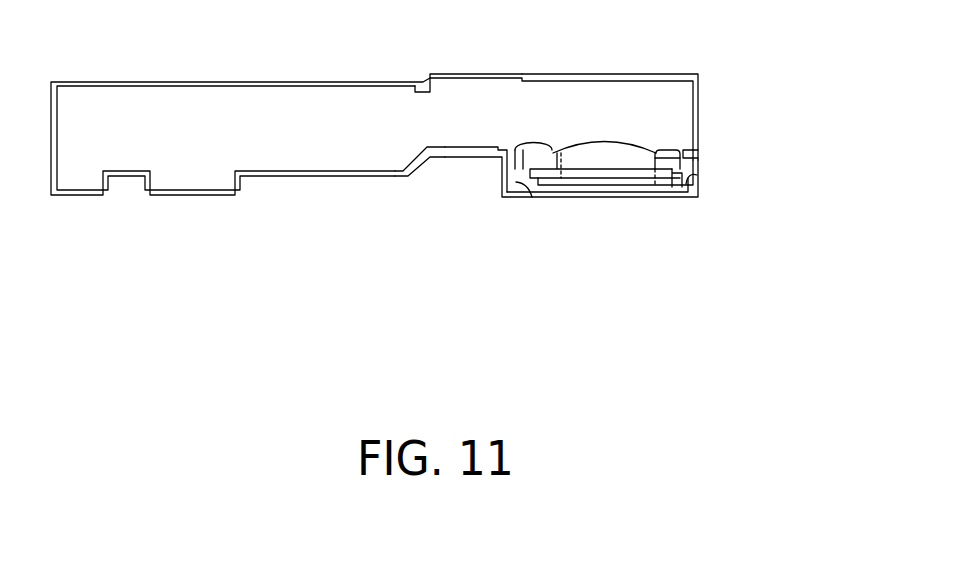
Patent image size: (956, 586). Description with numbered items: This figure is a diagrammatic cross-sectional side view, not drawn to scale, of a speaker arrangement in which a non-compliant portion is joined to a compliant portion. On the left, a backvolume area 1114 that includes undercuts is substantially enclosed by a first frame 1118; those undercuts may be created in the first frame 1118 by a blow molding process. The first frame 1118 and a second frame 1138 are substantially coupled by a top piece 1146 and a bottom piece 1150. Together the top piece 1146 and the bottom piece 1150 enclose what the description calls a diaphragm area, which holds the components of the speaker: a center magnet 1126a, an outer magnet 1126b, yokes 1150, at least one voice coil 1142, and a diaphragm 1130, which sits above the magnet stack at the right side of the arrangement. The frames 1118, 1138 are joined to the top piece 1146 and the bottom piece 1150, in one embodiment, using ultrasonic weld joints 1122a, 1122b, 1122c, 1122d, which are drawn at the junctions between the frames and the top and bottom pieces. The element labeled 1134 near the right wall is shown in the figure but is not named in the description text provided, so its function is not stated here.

The backvolume area 1114 is at (240, 113).
The ultrasonic weld joint 1122a is at (408, 61).
The top piece 1146 is at (564, 93).
The first frame 1118 is at (432, 196).
The ultrasonic weld joint 1122b is at (571, 215).
The ultrasonic weld joint 1122c is at (741, 139).
The ultrasonic weld joint 1122d is at (679, 194).
The diaphragm 1130 is at (672, 124).
The voice coil 1142 is at (725, 98).
The surround 1134 is at (754, 158).
The second frame 1138 is at (719, 191).
The center magnet 1126a is at (605, 192).
The outer magnet 1126b is at (658, 218).
The bottom piece 1150 is at (564, 144).